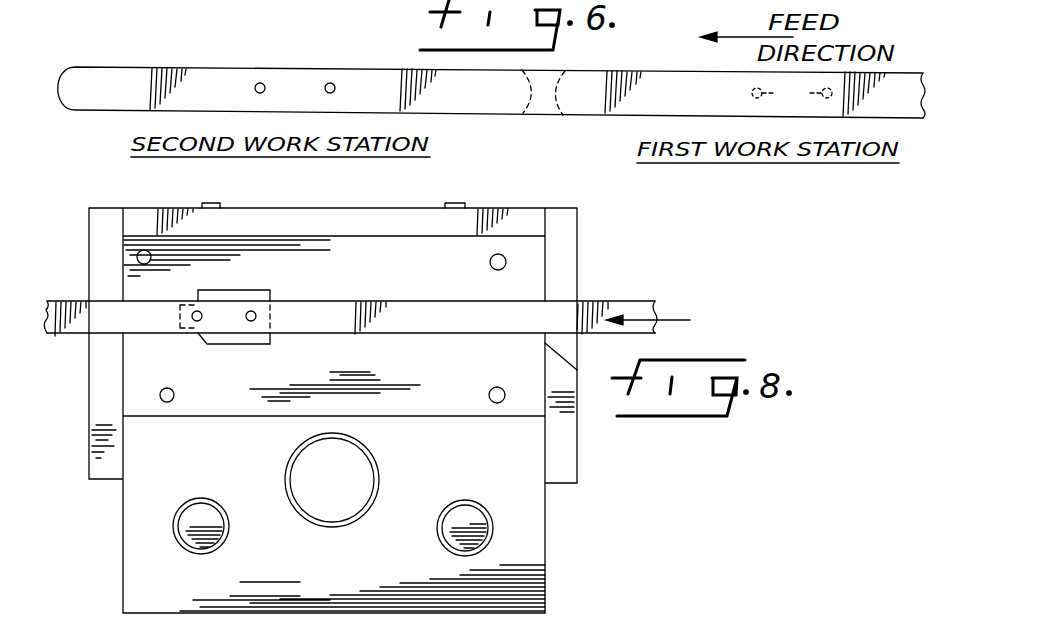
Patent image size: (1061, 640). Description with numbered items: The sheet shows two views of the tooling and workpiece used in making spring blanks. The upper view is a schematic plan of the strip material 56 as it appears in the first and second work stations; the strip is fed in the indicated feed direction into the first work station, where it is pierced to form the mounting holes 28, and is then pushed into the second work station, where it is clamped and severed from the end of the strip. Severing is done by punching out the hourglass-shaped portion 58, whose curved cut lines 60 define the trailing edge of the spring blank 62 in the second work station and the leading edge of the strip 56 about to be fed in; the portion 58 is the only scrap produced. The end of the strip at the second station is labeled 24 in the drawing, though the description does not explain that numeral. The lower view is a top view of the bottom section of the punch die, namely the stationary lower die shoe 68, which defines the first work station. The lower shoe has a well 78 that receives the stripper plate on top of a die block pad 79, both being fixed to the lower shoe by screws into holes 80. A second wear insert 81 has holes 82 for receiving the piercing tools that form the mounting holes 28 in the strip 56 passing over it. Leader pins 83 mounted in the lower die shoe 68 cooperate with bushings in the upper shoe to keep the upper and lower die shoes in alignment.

In FIG. 6, the leading end of strip 24 is at (60, 92).
In FIG. 6, the mounting holes 28 is at (330, 83).
In FIG. 6, the strip material 56 is at (901, 80).
In FIG. 8, the strip material 56 is at (641, 302).
In FIG. 6, the hourglass-shaped portion 58 is at (552, 72).
In FIG. 6, the curved cut lines 60 is at (540, 102).
In FIG. 6, the spring blank 62 is at (401, 68).
In FIG. 8, the lower die shoe 68 is at (541, 548).
In FIG. 8, the well 78 is at (374, 414).
In FIG. 8, the die block pad 79 is at (298, 398).
In FIG. 8, the holes 80 is at (493, 391).
In FIG. 8, the second wear insert 81 is at (272, 292).
In FIG. 8, the holes 82 is at (252, 311).
In FIG. 8, the leader pins 83 is at (433, 549).